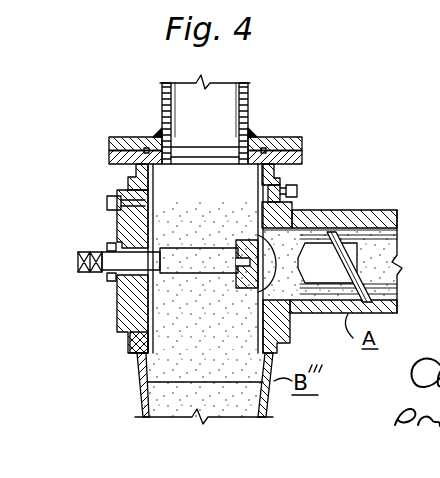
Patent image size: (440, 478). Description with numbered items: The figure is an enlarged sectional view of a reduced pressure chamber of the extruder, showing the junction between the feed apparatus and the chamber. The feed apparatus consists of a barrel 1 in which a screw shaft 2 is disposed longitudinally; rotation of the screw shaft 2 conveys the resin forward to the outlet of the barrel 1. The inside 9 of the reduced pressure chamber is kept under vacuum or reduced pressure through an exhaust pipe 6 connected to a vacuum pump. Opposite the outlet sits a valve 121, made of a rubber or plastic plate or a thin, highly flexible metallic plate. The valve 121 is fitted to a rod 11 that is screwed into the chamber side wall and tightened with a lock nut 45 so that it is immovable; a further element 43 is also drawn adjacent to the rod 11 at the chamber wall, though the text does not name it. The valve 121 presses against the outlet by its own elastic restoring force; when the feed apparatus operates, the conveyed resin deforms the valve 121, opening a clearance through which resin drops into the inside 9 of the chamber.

The barrel 1 is at (355, 212).
The screw shaft 2 is at (372, 243).
The exhaust pipe 6 is at (247, 106).
The inside of the reduced pressure chamber 9 is at (200, 362).
The rod 11 is at (168, 248).
The shaft 43 is at (108, 245).
The lock nut 45 is at (107, 280).
The valve 121 is at (295, 222).